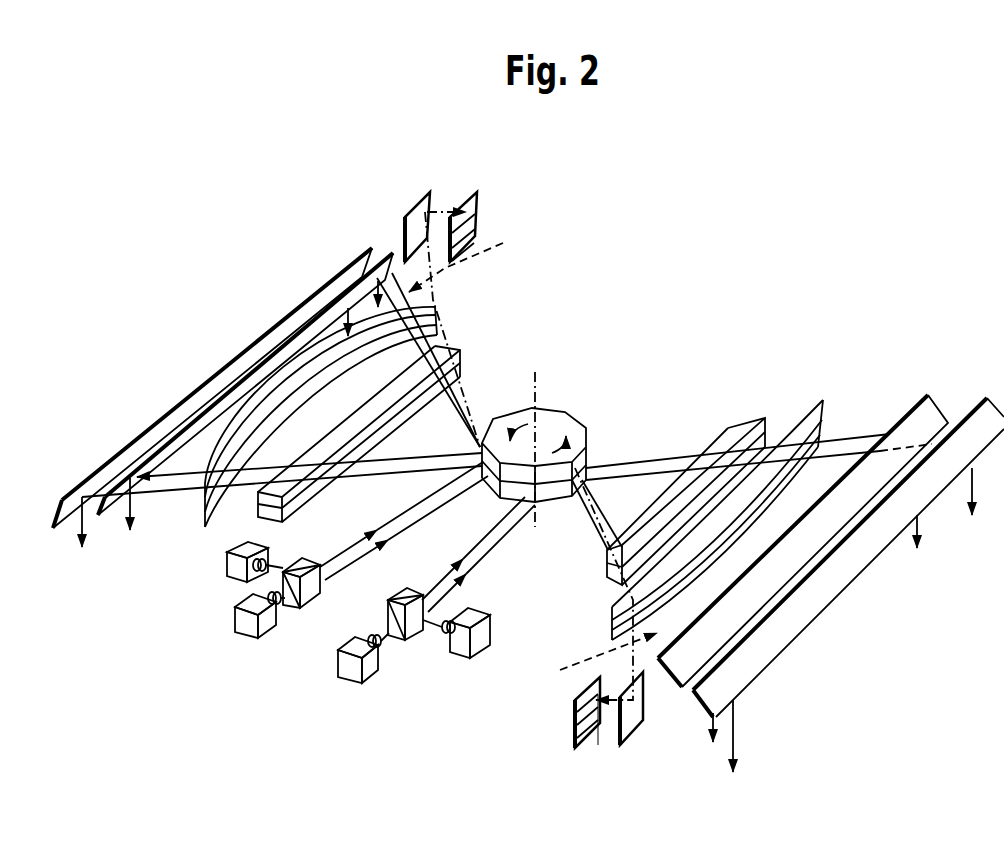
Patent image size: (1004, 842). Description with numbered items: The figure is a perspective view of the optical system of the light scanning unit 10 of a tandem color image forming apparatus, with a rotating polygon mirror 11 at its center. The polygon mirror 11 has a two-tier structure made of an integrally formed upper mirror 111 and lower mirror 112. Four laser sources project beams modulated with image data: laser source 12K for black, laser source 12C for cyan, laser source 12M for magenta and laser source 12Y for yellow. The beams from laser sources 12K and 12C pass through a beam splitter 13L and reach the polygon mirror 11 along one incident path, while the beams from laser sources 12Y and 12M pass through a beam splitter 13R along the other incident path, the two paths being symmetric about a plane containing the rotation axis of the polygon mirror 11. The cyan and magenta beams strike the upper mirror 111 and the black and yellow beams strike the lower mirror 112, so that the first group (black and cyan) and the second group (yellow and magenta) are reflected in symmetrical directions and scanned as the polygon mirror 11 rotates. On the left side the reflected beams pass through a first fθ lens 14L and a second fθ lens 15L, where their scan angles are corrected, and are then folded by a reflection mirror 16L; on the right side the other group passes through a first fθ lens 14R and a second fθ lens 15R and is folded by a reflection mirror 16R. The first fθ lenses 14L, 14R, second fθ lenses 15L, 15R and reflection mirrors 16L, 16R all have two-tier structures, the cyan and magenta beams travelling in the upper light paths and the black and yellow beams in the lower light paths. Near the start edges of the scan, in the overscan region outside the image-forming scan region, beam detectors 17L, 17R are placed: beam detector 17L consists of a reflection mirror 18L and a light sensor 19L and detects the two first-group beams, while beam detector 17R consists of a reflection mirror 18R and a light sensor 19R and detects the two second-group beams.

The light scanning unit 10 is at (620, 326).
The polygon mirror 11 is at (560, 435).
The upper mirror 111 is at (588, 440).
The lower mirror 112 is at (588, 462).
The laser source 12K is at (232, 568).
The laser source 12C is at (243, 637).
The laser source 12M is at (355, 687).
The laser source 12Y is at (463, 657).
The beam splitter 13L is at (308, 562).
The beam splitter 13R is at (397, 598).
The first fθ lens 14L is at (462, 352).
The first fθ lens 14R is at (745, 424).
The second fθ lens 15L is at (440, 312).
The second fθ lens 15R is at (807, 425).
The reflection mirror 16L is at (268, 335).
The reflection mirror 16R is at (972, 423).
The beam detector 17L is at (450, 193).
The beam detector 17R is at (597, 752).
The reflection mirror 18L is at (405, 217).
The reflection mirror 18R is at (633, 737).
The light sensor 19L is at (477, 220).
The light sensor 19R is at (577, 722).